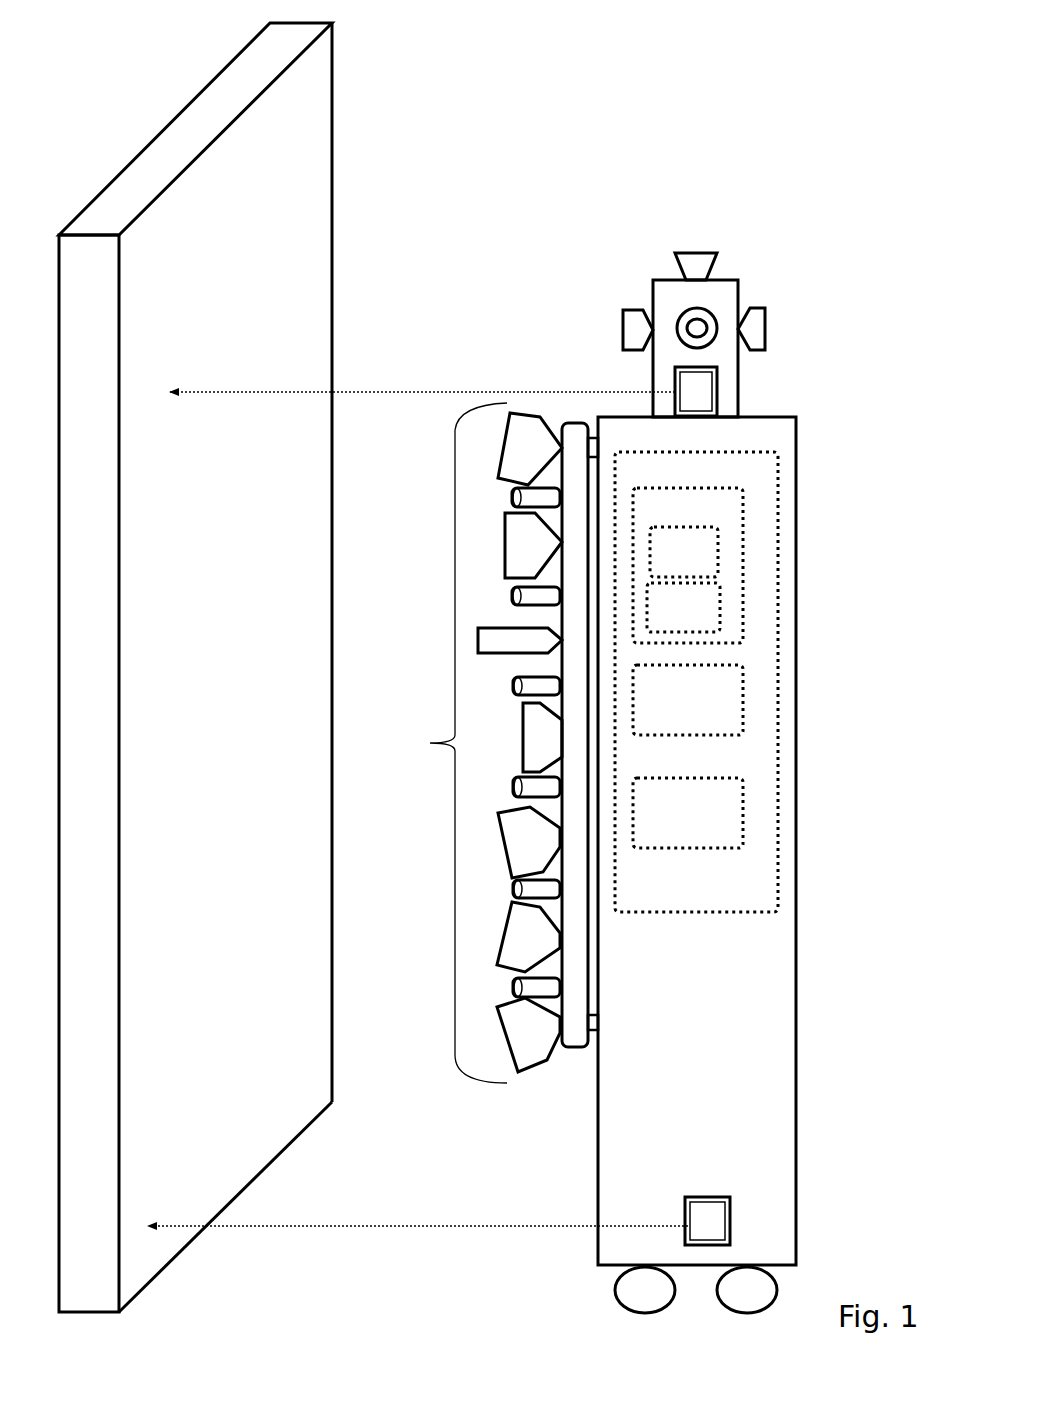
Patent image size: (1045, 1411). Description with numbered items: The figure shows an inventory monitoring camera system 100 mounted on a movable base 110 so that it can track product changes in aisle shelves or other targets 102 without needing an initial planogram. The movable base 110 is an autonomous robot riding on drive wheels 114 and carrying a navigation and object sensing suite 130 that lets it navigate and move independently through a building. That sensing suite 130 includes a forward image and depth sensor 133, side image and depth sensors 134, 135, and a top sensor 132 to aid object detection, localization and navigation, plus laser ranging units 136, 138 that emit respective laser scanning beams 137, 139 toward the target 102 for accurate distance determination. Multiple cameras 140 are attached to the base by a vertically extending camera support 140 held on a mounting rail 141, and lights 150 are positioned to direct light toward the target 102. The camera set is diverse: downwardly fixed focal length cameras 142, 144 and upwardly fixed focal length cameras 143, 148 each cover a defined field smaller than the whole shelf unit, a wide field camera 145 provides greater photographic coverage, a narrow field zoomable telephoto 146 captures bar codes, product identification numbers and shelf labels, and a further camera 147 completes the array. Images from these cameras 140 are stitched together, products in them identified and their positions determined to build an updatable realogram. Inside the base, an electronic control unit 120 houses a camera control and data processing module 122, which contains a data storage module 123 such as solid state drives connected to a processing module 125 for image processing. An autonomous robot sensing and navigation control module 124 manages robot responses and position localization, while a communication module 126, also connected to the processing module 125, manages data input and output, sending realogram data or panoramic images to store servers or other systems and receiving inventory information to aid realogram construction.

The inventory monitoring camera system 100 is at (773, 87).
The target 102 is at (343, 150).
The movable base 110 is at (798, 1005).
The drive wheels 114 is at (597, 1297).
The electronic control unit 120 is at (726, 477).
The camera control and data processing module 122 is at (666, 517).
The data storage module 123 is at (666, 566).
The autonomous robot sensing and navigation control module 124 is at (666, 706).
The processing module 125 is at (664, 619).
The communication module 126 is at (666, 819).
The navigation and object sensing suite 130 is at (763, 235).
The top image and depth sensor 132 is at (681, 275).
The forward image and depth sensor 133 is at (712, 315).
The side image and depth sensor 134 is at (767, 323).
The side image and depth sensor 135 is at (624, 341).
The laser ranging unit 136 is at (681, 400).
The laser scanning beam 137 is at (407, 390).
The laser ranging unit 138 is at (692, 1230).
The laser scanning beam 139 is at (395, 1222).
The cameras / vertically extending camera support 140 is at (430, 743).
The mounting rail 141 is at (572, 1050).
The downwardly fixed focal length camera 142 is at (511, 1042).
The upwardly fixed focal length camera 143 is at (513, 955).
The downwardly fixed focal length camera 144 is at (516, 850).
The wide field camera 145 is at (524, 749).
The narrow field zoomable telephoto 146 is at (508, 652).
The tool 147 is at (513, 560).
The upwardly fixed focal length camera 148 is at (513, 457).
The lights 150 is at (494, 985).